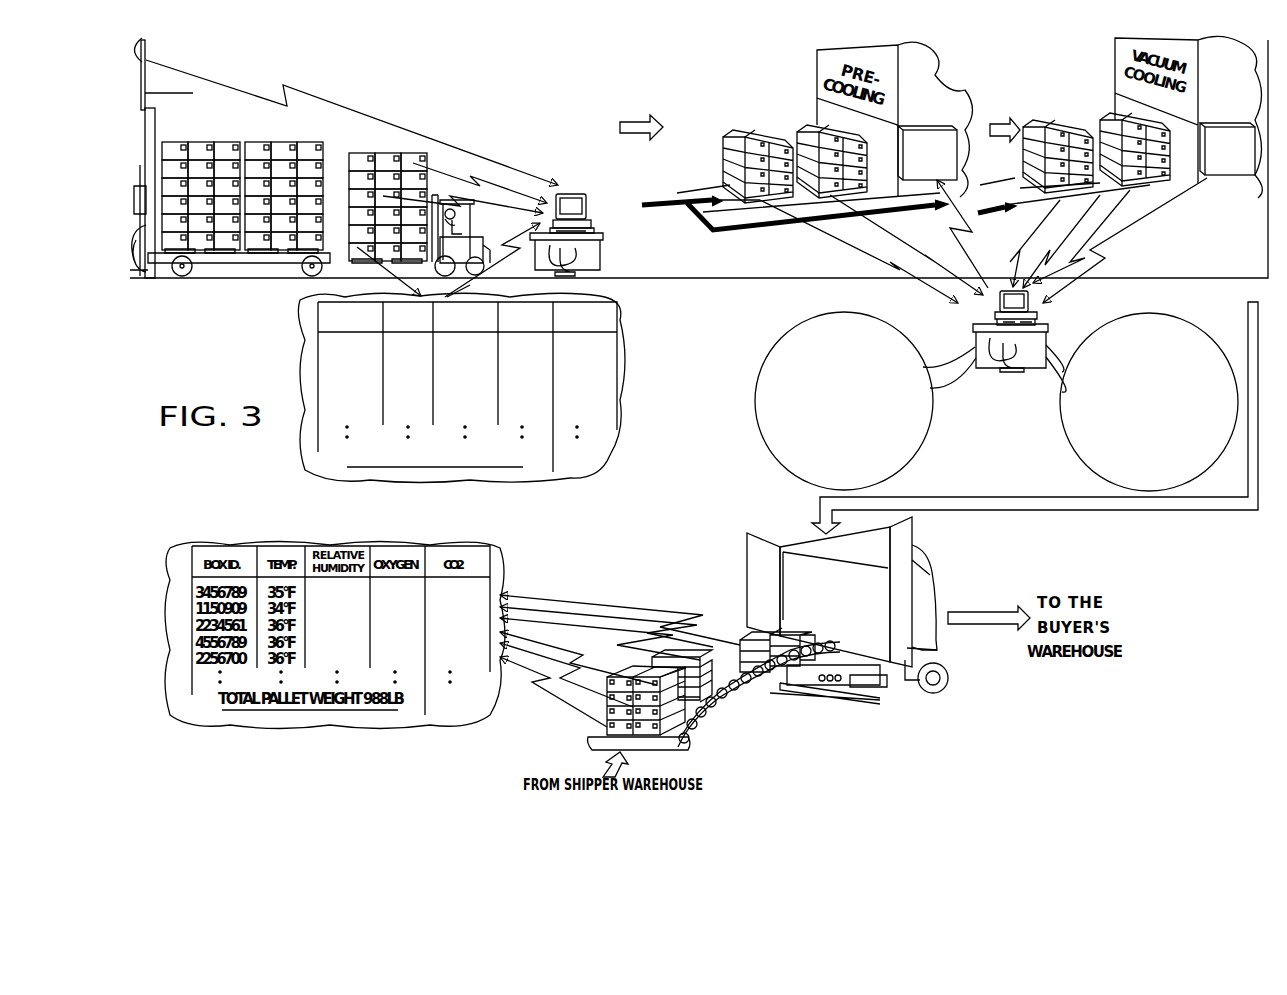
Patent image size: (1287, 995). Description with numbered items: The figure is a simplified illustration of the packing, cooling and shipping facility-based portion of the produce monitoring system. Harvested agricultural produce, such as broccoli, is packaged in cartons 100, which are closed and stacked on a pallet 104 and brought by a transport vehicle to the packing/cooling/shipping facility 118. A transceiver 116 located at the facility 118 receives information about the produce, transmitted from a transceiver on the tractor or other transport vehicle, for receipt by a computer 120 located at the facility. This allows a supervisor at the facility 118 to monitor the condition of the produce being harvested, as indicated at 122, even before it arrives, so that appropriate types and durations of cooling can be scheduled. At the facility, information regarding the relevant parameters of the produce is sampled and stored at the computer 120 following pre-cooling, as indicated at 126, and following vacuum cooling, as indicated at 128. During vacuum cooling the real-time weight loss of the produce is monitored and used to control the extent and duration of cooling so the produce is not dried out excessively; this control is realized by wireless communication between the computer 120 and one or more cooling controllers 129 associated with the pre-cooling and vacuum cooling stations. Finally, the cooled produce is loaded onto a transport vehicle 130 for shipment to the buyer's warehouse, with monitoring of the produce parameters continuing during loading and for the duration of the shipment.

The carton 100 is at (245, 230).
The pallet 104 is at (197, 216).
The transceiver 116 is at (147, 44).
The packing/cooling/shipping facility 118 is at (607, 93).
The computer 120 is at (590, 200).
The monitored condition of produce being harvested 122 is at (625, 338).
The produce parameters following pre-cooling 126 is at (760, 415).
The produce parameters following vacuum cooling 128 is at (1207, 325).
The cooling controller 129 is at (948, 128).
The transport vehicle 130 is at (795, 542).